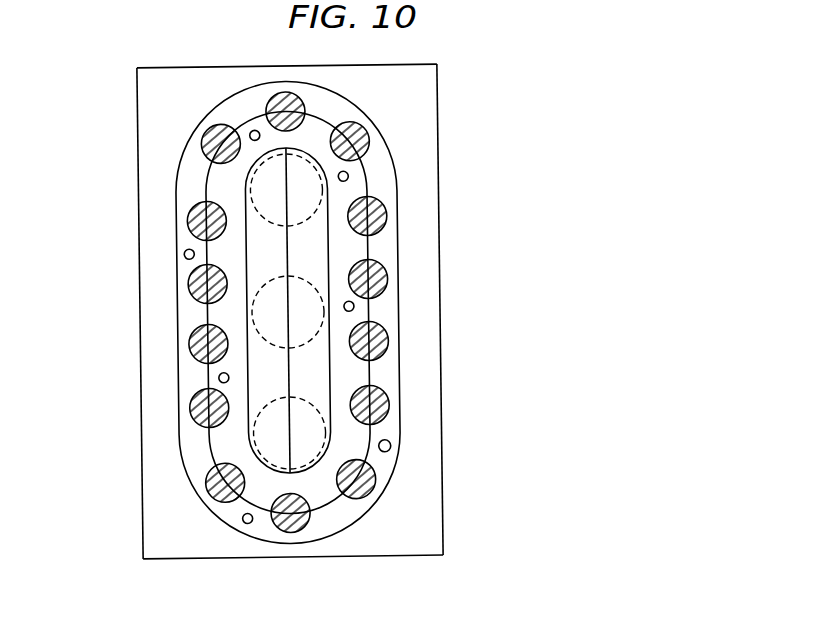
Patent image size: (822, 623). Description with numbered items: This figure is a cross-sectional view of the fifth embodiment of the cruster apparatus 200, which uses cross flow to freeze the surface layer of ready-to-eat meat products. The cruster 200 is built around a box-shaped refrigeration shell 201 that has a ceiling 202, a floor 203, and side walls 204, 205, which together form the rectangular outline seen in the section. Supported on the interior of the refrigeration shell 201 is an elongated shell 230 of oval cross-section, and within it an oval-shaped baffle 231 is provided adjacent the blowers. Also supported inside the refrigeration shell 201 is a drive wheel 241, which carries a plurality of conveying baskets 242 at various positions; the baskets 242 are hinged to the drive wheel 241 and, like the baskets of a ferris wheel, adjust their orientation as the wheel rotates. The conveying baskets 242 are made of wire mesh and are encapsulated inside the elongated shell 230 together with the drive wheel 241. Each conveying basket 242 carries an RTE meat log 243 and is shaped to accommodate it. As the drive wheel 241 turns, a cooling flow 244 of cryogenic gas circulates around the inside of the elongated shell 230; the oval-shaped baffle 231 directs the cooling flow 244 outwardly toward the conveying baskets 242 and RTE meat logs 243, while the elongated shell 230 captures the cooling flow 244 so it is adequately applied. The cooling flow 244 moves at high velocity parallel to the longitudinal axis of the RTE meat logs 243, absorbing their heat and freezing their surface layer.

The cruster apparatus 200 is at (70, 76).
The refrigeration shell 201 is at (166, 60).
The ceiling 202 is at (205, 66).
The floor 203 is at (187, 559).
The side wall 204 is at (140, 270).
The side wall 205 is at (441, 500).
The elongated shell 230 is at (403, 398).
The oval-shaped baffle 231 is at (307, 358).
The drive wheel 241 is at (372, 372).
The conveying baskets 242 is at (357, 483).
The RTE meat logs 243 is at (343, 345).
The cooling flow 244 is at (391, 446).